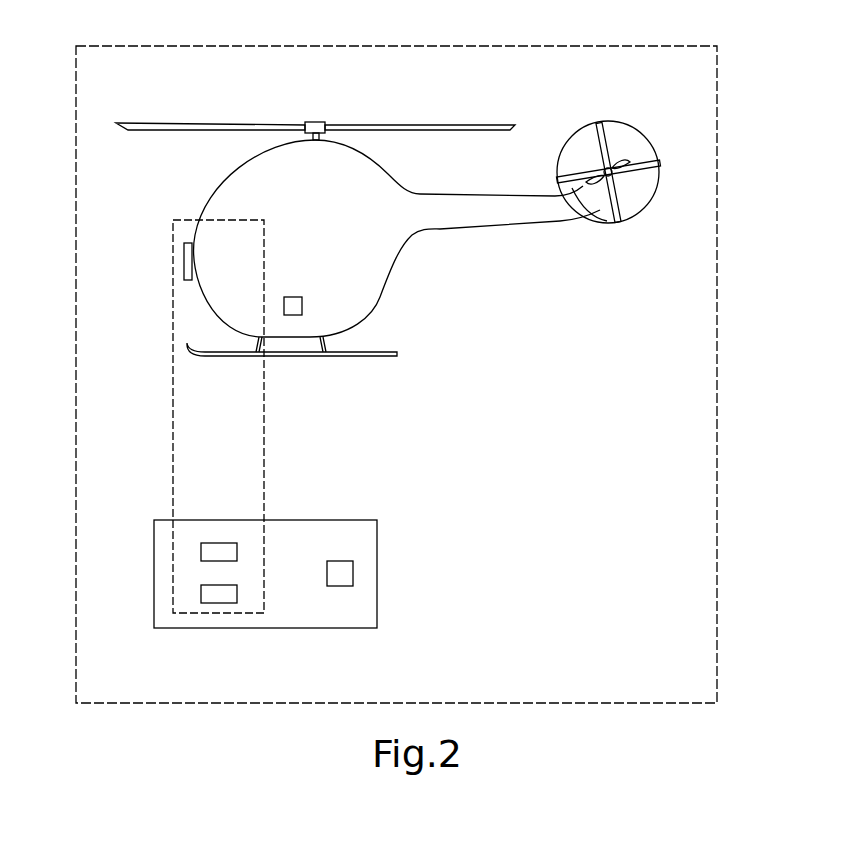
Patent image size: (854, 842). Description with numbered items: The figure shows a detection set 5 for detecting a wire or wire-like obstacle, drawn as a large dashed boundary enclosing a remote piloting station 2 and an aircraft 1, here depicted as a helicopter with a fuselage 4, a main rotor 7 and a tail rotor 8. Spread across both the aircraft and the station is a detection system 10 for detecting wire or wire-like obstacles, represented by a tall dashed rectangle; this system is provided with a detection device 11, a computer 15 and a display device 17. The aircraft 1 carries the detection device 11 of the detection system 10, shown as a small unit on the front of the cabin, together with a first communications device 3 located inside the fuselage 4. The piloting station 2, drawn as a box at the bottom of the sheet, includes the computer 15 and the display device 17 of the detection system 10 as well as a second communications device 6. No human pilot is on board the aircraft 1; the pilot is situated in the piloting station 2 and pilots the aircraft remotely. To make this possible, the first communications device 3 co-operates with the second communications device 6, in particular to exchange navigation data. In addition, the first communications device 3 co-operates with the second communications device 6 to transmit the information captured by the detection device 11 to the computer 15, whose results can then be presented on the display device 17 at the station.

The aircraft 1 is at (388, 207).
The remote piloting station 2 is at (274, 582).
The first communications device 3 is at (303, 306).
The fuselage 4 is at (380, 297).
The detection set 5 is at (717, 425).
The second communications device 6 is at (353, 572).
The main rotor 7 is at (422, 122).
The tail rotor 8 is at (605, 133).
The detection system 10 is at (264, 427).
The detection device 11 is at (192, 255).
The computer 15 is at (201, 550).
The display device 17 is at (201, 595).